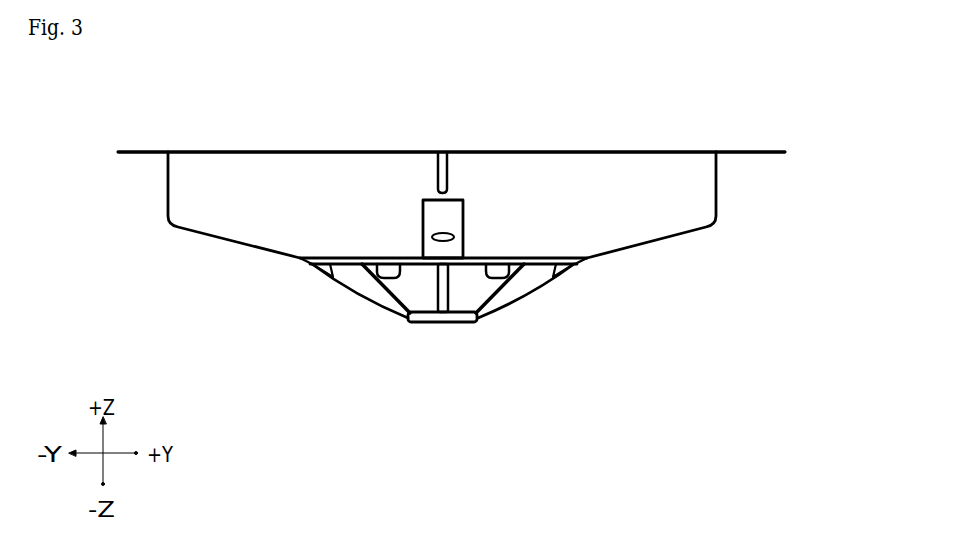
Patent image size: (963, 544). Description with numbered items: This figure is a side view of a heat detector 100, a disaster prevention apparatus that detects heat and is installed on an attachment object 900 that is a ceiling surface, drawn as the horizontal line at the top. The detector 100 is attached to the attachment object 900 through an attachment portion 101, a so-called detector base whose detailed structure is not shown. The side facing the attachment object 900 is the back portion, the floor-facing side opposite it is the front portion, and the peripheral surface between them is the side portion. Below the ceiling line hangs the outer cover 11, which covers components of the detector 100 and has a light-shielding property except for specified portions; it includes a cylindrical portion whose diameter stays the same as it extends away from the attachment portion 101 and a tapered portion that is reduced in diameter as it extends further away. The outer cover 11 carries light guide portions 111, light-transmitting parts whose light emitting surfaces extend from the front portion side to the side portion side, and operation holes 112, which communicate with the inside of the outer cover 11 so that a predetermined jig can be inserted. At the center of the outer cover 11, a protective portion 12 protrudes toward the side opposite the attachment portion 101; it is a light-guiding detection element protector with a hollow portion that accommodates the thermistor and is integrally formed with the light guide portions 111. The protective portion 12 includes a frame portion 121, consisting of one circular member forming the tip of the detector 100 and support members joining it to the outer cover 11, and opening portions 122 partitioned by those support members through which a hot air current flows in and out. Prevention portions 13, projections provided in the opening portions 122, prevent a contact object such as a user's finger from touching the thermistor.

The detector 100 is at (487, 258).
The attachment portion 101 is at (592, 151).
The attachment object 900 is at (765, 153).
The outer cover 11 is at (218, 238).
The light guide portion 111 is at (423, 202).
The operation hole 112 is at (423, 237).
The protective portion 12 is at (448, 344).
The frame portion 121 is at (503, 300).
The opening portion 122 is at (417, 292).
The prevention portion 13 is at (378, 279).